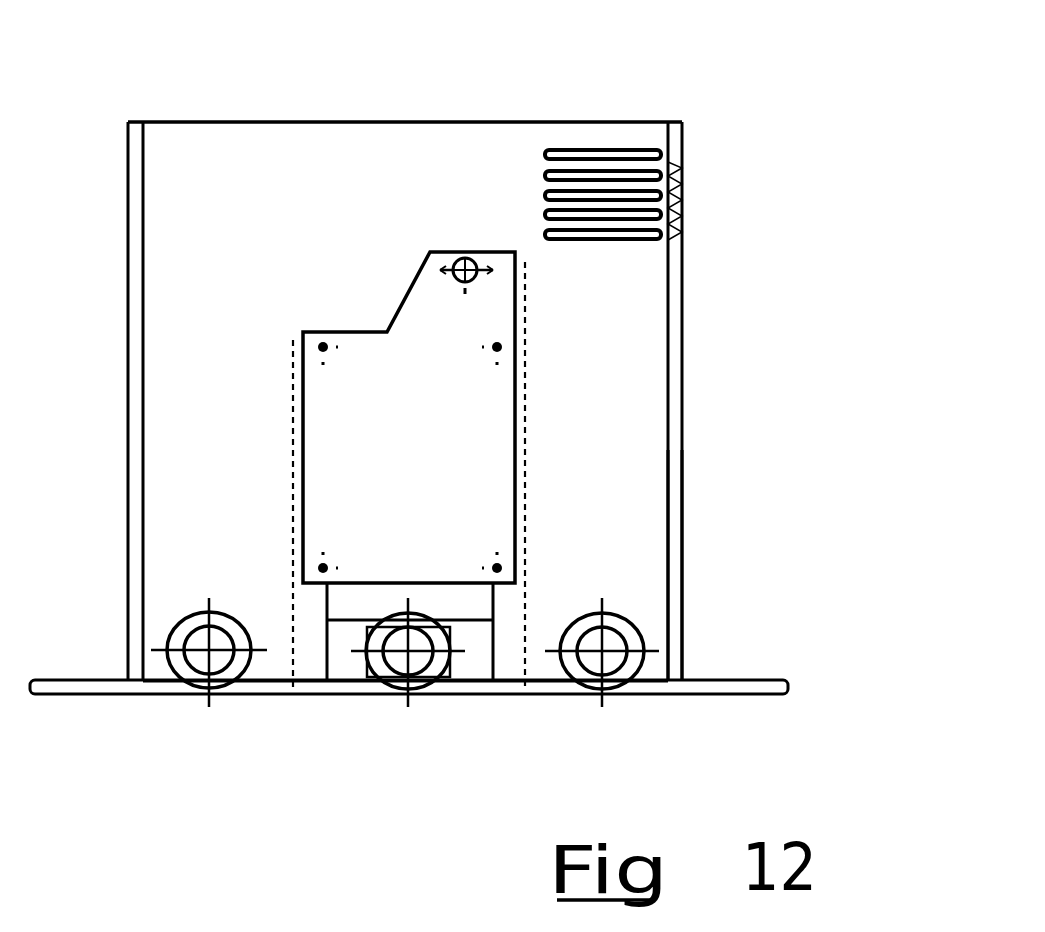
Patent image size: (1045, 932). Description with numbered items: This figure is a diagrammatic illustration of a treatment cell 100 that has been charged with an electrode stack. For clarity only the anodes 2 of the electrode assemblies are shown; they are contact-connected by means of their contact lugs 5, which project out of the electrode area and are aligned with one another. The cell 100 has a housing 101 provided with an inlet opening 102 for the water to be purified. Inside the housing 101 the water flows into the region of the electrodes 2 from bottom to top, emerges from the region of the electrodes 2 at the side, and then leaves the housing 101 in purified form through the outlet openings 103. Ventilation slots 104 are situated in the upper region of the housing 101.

The anode 2 is at (522, 294).
The contact lug 5 is at (502, 255).
The treatment cell 100 is at (700, 470).
The housing 101 is at (680, 585).
The inlet opening 102 is at (387, 695).
The outlet opening 103 is at (187, 693).
The ventilation slots 104 is at (680, 165).